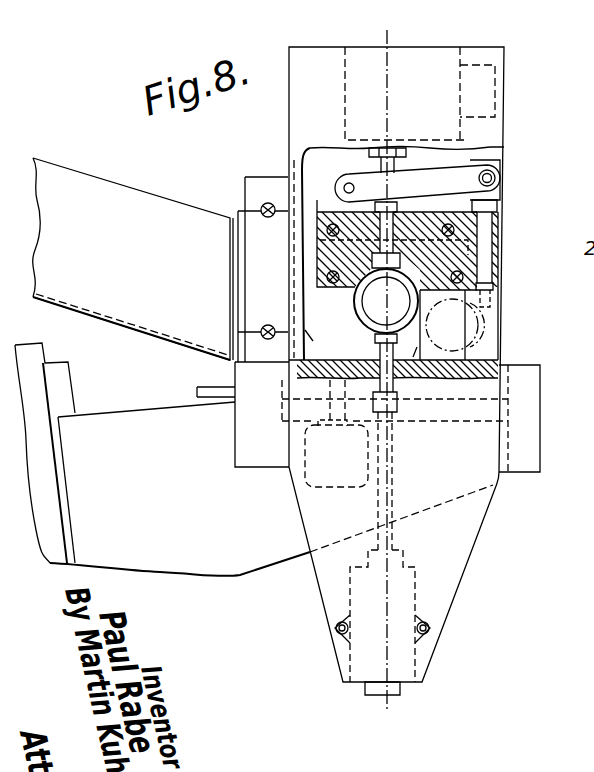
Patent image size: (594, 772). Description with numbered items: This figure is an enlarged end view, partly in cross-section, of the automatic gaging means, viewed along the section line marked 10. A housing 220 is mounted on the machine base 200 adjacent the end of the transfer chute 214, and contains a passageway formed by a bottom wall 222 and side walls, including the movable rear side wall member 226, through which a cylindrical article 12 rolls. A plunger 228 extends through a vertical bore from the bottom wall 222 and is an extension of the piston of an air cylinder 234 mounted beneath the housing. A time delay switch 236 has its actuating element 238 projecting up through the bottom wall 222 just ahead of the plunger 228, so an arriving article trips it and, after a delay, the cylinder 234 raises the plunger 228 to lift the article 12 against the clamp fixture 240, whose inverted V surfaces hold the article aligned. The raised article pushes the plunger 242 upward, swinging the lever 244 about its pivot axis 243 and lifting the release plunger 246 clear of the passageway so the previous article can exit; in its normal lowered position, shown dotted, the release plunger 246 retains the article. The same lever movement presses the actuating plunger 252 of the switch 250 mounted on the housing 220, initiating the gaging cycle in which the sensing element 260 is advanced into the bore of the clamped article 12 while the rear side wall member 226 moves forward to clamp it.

The section line 10 is at (364, 40).
The article 12 is at (353, 306).
The machine base 200 is at (62, 368).
The transfer chute 214 is at (77, 170).
The housing 220 is at (505, 92).
The bottom wall 222 is at (502, 358).
The rear side wall member 226 is at (416, 362).
The plunger 228 is at (377, 346).
The air cylinder 234 is at (415, 568).
The time delay switch 236 is at (305, 440).
The actuating element 238 is at (331, 373).
The clamp fixture 240 is at (322, 261).
The plunger 242 is at (400, 203).
The pivot axis 243 is at (353, 163).
The lever 244 is at (453, 178).
The release plunger 246 is at (487, 222).
The switch 250 is at (344, 86).
The actuating plunger 252 is at (393, 144).
The sensing element 260 is at (366, 296).